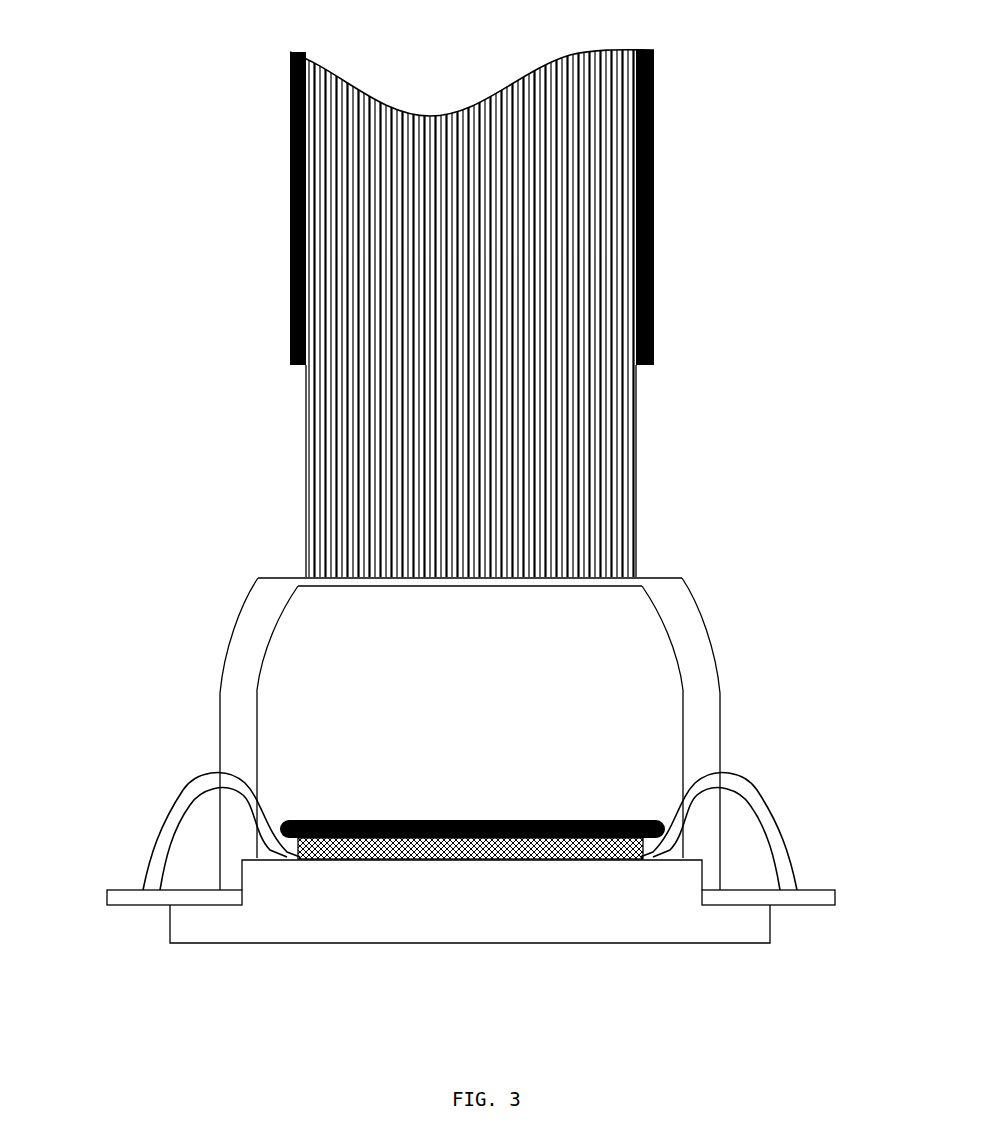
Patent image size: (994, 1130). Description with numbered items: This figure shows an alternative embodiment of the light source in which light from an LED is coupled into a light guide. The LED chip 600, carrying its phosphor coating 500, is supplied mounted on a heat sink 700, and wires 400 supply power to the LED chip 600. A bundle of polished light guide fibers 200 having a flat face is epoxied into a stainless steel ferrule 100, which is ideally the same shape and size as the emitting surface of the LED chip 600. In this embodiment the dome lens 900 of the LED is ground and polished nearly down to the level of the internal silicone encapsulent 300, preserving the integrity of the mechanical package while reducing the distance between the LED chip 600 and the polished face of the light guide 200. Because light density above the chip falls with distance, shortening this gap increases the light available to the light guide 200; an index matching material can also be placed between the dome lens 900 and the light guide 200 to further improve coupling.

The stainless steel ferrule 100 is at (655, 163).
The light guide fibers 200 is at (528, 143).
The internal silicone encapsulent 300 is at (610, 683).
The wires 400 is at (168, 808).
The phosphor coating 500 is at (296, 820).
The LED chip 600 is at (602, 858).
The heat sink 700 is at (288, 943).
The dome lens 900 is at (260, 578).